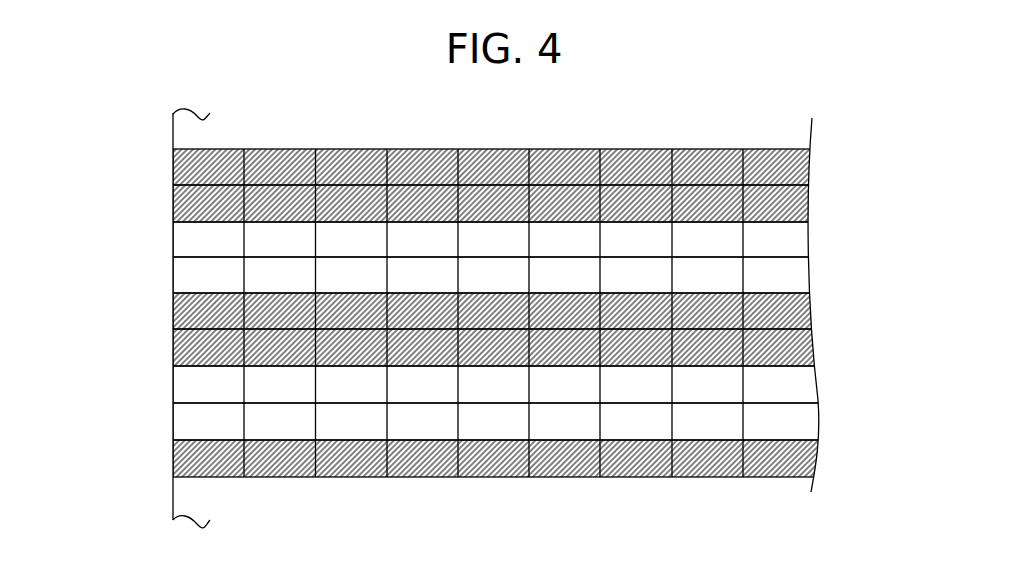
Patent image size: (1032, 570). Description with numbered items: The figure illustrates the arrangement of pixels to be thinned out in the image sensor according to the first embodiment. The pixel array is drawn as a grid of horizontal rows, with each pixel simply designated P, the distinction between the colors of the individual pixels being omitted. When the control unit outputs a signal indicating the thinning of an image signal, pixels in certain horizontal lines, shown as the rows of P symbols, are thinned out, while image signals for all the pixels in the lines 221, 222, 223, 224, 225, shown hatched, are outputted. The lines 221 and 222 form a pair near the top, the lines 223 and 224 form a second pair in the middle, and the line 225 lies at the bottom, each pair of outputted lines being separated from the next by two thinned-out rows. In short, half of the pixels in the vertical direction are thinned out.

The line 221 is at (180, 167).
The line 222 is at (180, 202).
The line 223 is at (180, 311).
The line 224 is at (180, 346).
The line 225 is at (180, 456).